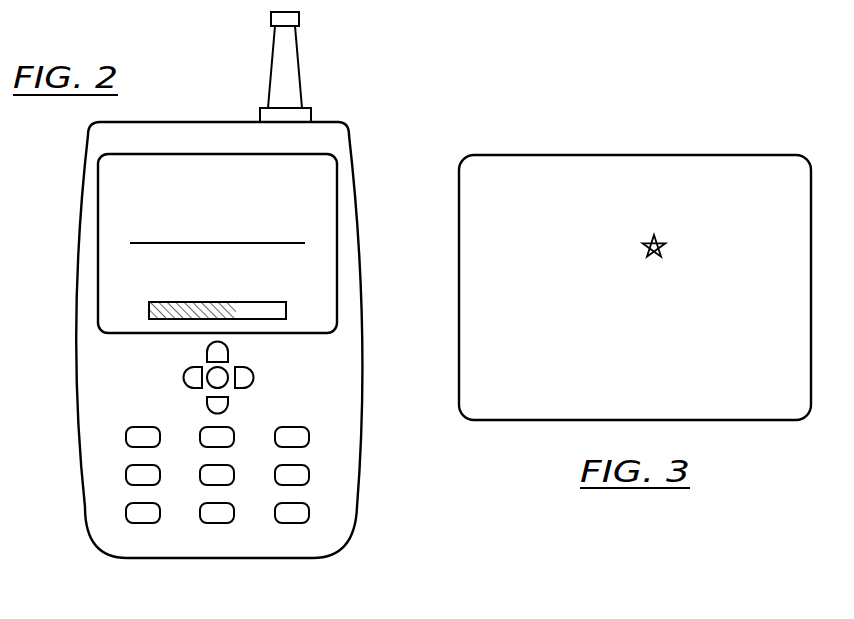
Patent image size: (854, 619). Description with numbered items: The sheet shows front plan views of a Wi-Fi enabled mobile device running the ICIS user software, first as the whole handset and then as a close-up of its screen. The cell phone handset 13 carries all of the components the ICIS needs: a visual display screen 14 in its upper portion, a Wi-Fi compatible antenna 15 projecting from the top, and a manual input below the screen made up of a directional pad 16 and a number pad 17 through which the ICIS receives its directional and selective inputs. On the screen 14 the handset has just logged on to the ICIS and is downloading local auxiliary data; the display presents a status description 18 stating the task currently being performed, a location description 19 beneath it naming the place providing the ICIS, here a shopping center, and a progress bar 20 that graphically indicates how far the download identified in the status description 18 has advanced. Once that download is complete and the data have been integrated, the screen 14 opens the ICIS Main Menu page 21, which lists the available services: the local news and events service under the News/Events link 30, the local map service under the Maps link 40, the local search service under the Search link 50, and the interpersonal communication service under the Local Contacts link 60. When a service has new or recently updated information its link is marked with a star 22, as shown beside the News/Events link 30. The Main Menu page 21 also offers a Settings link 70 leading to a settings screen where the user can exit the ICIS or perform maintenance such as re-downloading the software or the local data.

In FIG. 2, the cell phone handset 13 is at (375, 463).
In FIG. 2, the visual display screen 14 is at (97, 273).
In FIG. 3, the visual display screen 14 is at (540, 155).
In FIG. 2, the Wi-Fi compatible antenna 15 is at (272, 65).
In FIG. 2, the directional pad 16 is at (173, 372).
In FIG. 2, the number pad 17 is at (110, 447).
In FIG. 2, the status description 18 is at (103, 203).
In FIG. 2, the location description 19 is at (127, 228).
In FIG. 2, the progress bar 20 is at (200, 302).
In FIG. 3, the ICIS Main Menu page 21 is at (520, 188).
In FIG. 3, the star 22 is at (670, 251).
In FIG. 3, the News/Events link 30 is at (485, 247).
In FIG. 3, the Maps link 40 is at (485, 279).
In FIG. 3, the Search link 50 is at (485, 310).
In FIG. 3, the Local Contacts link 60 is at (485, 342).
In FIG. 3, the Settings link 70 is at (485, 374).